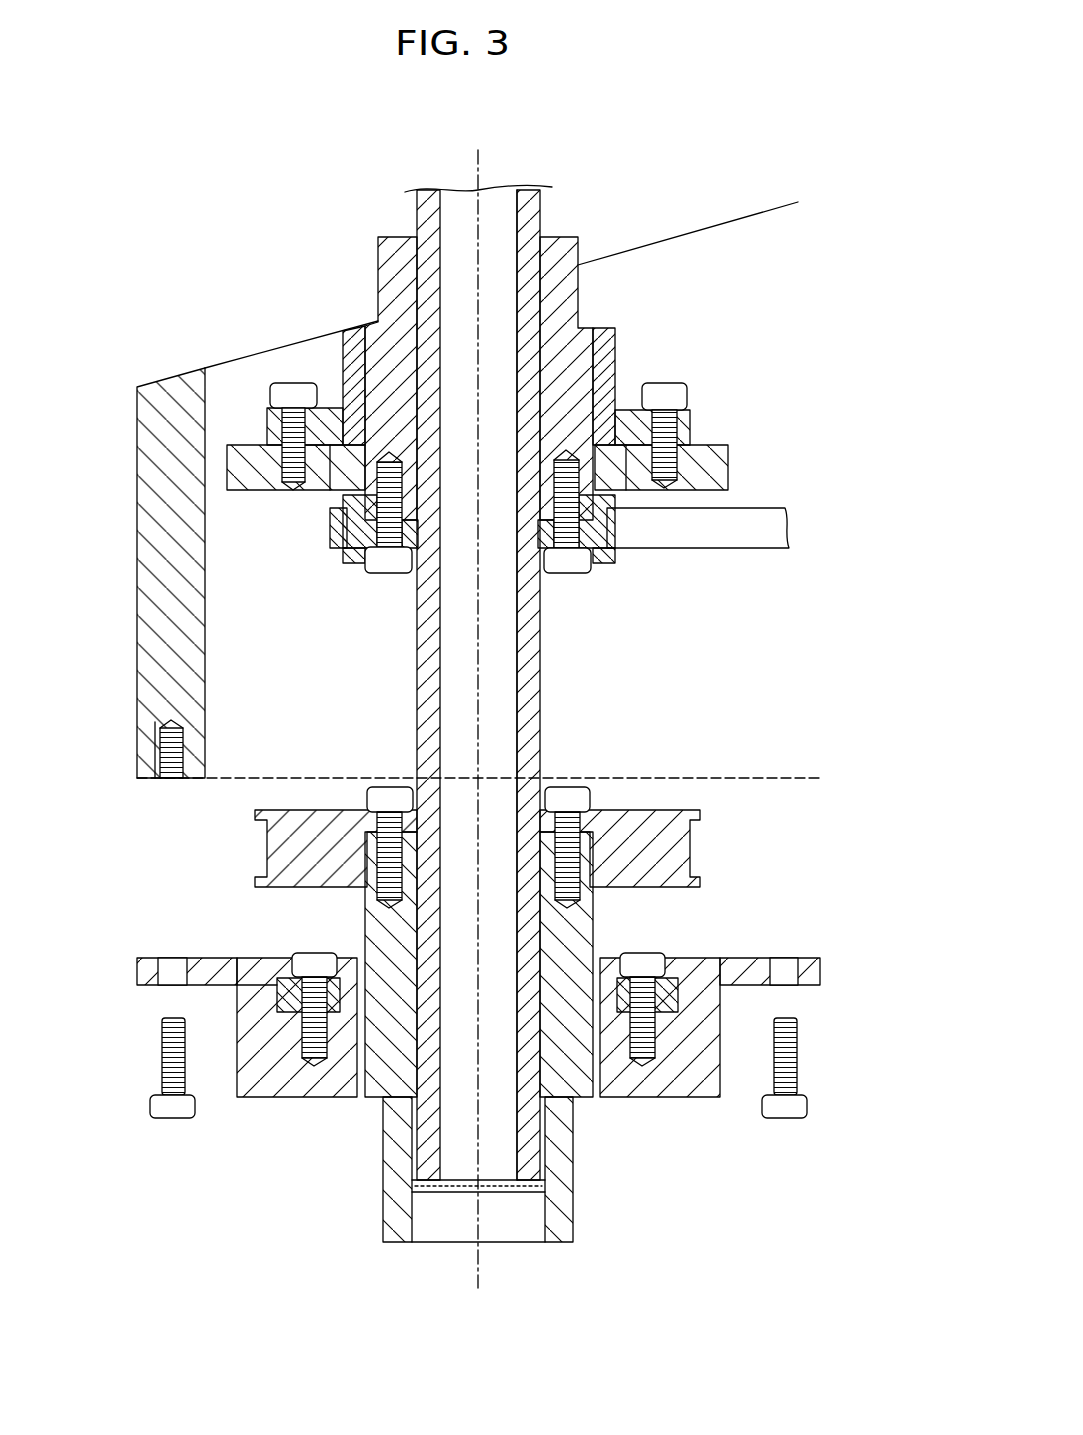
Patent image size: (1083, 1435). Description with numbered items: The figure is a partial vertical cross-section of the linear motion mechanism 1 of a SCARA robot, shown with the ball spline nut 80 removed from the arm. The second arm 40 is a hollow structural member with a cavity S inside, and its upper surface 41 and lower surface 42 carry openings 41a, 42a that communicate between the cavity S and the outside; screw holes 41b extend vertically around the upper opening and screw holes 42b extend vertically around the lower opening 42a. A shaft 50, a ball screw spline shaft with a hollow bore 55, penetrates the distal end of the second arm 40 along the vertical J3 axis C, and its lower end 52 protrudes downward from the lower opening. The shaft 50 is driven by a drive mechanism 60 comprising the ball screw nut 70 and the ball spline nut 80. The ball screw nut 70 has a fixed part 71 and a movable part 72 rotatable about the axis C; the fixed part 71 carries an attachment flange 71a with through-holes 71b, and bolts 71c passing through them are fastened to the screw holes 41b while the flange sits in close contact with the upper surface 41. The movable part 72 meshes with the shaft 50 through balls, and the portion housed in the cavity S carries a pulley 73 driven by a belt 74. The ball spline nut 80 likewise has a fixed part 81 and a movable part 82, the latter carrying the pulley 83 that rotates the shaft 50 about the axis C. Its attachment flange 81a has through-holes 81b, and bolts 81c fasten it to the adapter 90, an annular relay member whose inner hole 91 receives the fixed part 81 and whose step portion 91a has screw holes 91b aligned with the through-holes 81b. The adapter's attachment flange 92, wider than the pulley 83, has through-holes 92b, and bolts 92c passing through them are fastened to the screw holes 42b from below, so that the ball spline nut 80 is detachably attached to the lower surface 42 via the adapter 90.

The linear motion mechanism 1 is at (161, 313).
The second arm 40 is at (137, 685).
The upper surface 41 is at (267, 447).
The opening 41a is at (333, 478).
The screw holes 41b is at (283, 465).
The lower surface 42 is at (145, 782).
The opening 42a is at (205, 757).
The screw holes 42b is at (175, 782).
The shaft 50 is at (544, 209).
The lower end 52 is at (527, 1194).
The hollow bore 55 is at (517, 208).
The drive mechanism 60 is at (744, 363).
The ball screw nut 70 is at (282, 232).
The fixed part 71 is at (343, 355).
The attachment flange 71a is at (690, 425).
The through-holes 71b is at (660, 410).
The bolts 71c is at (678, 383).
The movable part 72 is at (378, 262).
The pulley 73 is at (603, 565).
The belt 74 is at (722, 552).
The ball spline nut 80 is at (287, 1127).
The fixed part 81 is at (345, 1097).
The attachment flange 81a is at (277, 1000).
The through-holes 81b is at (293, 950).
The bolts 81c is at (330, 957).
The movable part 82 is at (383, 1150).
The pulley 83 is at (610, 810).
The adapter 90 is at (819, 951).
The inner hole 91 is at (605, 1097).
The step portion 91a is at (678, 997).
The screw holes 91b is at (648, 1062).
The attachment flange 92 is at (137, 972).
The through-holes 92b is at (170, 958).
The bolts 92c is at (172, 1120).
The cavity S is at (213, 595).
The J3 axis C is at (477, 740).